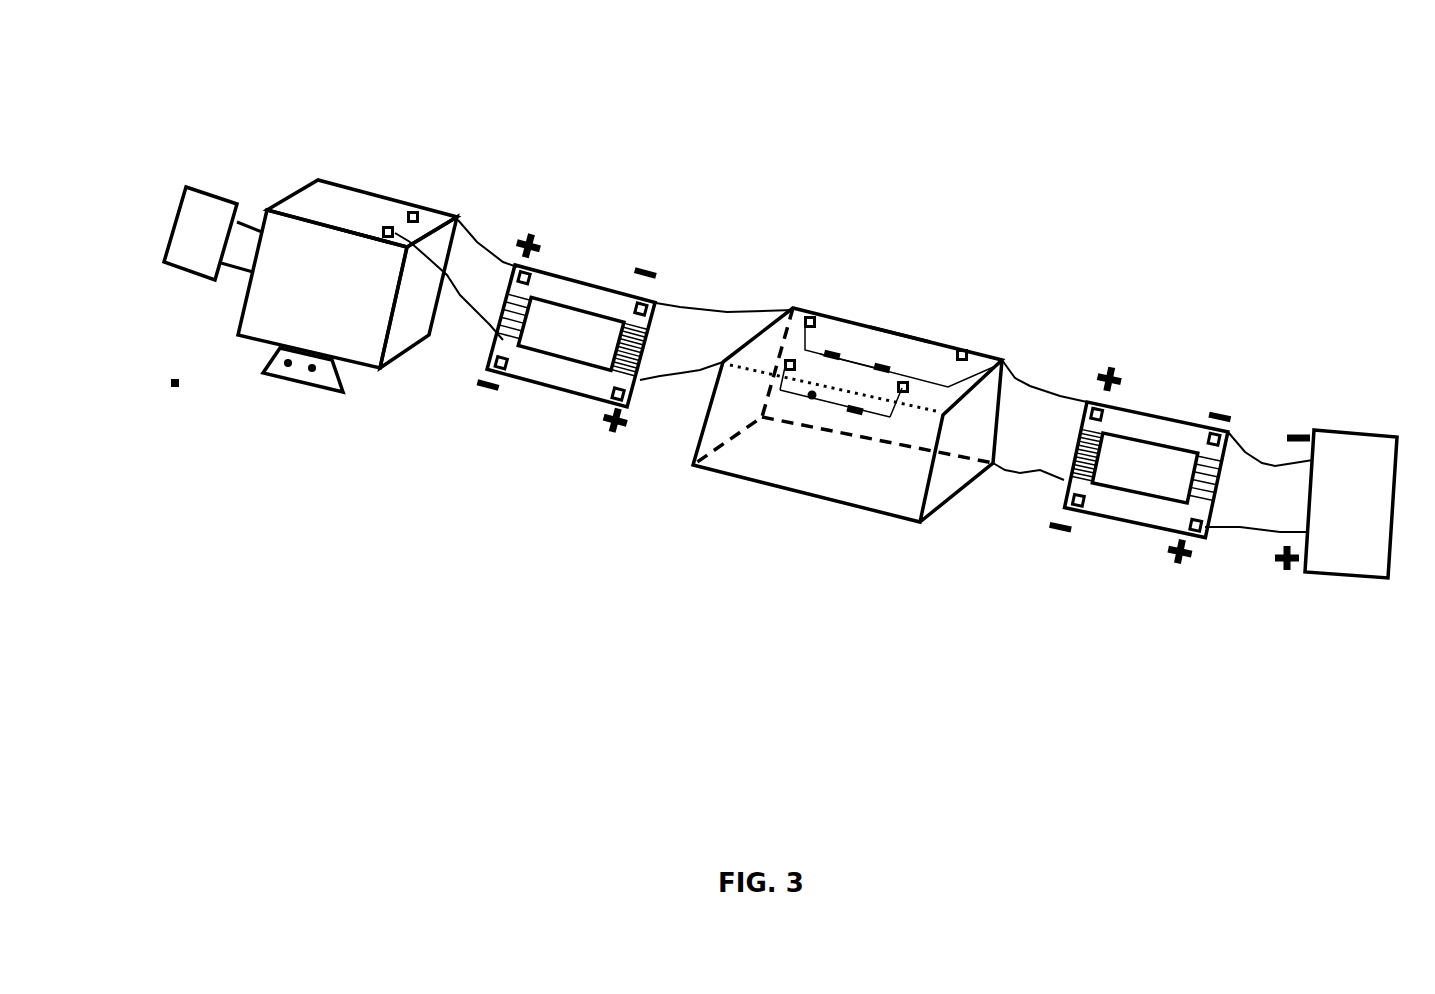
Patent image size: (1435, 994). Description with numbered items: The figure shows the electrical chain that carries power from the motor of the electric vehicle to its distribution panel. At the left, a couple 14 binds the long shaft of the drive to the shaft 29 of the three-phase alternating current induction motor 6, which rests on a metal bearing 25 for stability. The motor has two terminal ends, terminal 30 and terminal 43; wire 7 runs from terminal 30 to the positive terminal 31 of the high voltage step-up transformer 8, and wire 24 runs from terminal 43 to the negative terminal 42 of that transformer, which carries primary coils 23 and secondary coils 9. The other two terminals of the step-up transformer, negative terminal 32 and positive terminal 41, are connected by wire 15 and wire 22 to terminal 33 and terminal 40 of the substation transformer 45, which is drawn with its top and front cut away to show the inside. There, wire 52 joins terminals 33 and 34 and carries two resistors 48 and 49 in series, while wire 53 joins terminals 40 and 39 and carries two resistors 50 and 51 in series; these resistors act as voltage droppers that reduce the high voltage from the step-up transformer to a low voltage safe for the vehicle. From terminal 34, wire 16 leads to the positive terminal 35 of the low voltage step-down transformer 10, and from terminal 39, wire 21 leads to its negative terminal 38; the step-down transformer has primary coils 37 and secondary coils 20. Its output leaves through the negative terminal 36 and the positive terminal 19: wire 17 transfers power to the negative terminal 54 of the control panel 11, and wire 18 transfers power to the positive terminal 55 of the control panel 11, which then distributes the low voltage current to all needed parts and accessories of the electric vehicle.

The 3-phase alternating current induction motor 6 is at (352, 322).
The wire 7 is at (478, 237).
The high voltage step-up transformer 8 is at (588, 381).
The secondary coils of the high voltage step-up transformer 9 is at (617, 348).
The low voltage step-down transformer 10 is at (1165, 461).
The control panel 11 is at (1332, 574).
The couple 14 is at (201, 196).
The wire 15 is at (577, 407).
The wire 16 is at (1039, 388).
The wire 17 is at (1264, 463).
The wire 18 is at (1253, 517).
The positive terminal of the low voltage step-down transformer 19 is at (1202, 540).
The secondary coils of the low voltage step-down transformer 20 is at (1082, 462).
The wire 21 is at (1002, 467).
The wire 22 is at (681, 373).
The primary coils of the high voltage step-up transformer 23 is at (527, 327).
The wire 24 is at (458, 295).
The metal bearing 25 is at (297, 375).
The shaft of the 3-phase alternating current induction motor 29 is at (228, 262).
The terminal of the 3-phase alternating current induction motor 30 is at (408, 210).
The positive terminal of the high voltage step-up transformer 31 is at (513, 265).
The negative terminal of the high voltage step-up transformer 32 is at (645, 297).
The terminal of the substation transformer 33 is at (813, 307).
The terminal of the substation transformer 34 is at (963, 347).
The positive terminal of the low voltage step-down transformer 35 is at (1084, 402).
The negative terminal of the low voltage step-down transformer 36 is at (1198, 432).
The primary coils of the low voltage step-down transformer 37 is at (1185, 483).
The negative terminal of the low voltage step-down transformer 38 is at (1089, 497).
The terminal of the substation transformer 39 is at (901, 390).
The terminal of the substation transformer 40 is at (790, 370).
The positive terminal of the high voltage step-up transformer 41 is at (637, 403).
The negative terminal of the high voltage step-up transformer 42 is at (512, 377).
The terminal of the 3-phase alternating current induction motor 43 is at (369, 237).
The substation transformer 45 is at (901, 327).
The resistor 48 is at (897, 367).
The resistor 49 is at (830, 348).
The resistor 50 is at (807, 395).
The resistor 51 is at (859, 413).
The wire 52 is at (857, 355).
The wire 53 is at (827, 407).
The negative terminal of the control panel 54 is at (1301, 432).
The positive terminal of the control panel 55 is at (1285, 570).